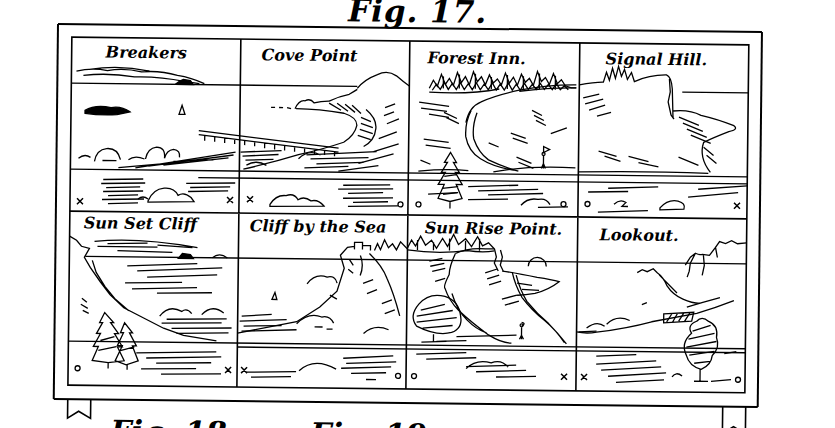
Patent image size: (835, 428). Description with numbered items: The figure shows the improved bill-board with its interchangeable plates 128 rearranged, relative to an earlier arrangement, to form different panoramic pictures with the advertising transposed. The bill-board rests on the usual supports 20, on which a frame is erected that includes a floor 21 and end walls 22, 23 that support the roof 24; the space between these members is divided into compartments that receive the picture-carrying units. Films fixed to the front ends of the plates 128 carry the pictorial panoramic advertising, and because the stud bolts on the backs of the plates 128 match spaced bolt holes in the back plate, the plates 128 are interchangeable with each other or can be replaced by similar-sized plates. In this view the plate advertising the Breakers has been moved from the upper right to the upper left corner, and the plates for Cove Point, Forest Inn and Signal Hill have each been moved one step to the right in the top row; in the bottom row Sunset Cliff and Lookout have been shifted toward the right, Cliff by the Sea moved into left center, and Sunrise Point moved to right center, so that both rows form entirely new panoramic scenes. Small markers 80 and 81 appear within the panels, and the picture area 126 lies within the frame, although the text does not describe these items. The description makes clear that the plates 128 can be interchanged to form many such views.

The supports 20 is at (72, 410).
The floor 21 is at (492, 397).
The end wall 22 is at (58, 146).
The end wall 23 is at (762, 147).
The roof 24 is at (556, 24).
The circular station marker 80 is at (78, 370).
The cross station marker 81 is at (78, 201).
The scene panel 126 is at (664, 7).
The plates 128 is at (76, 185).